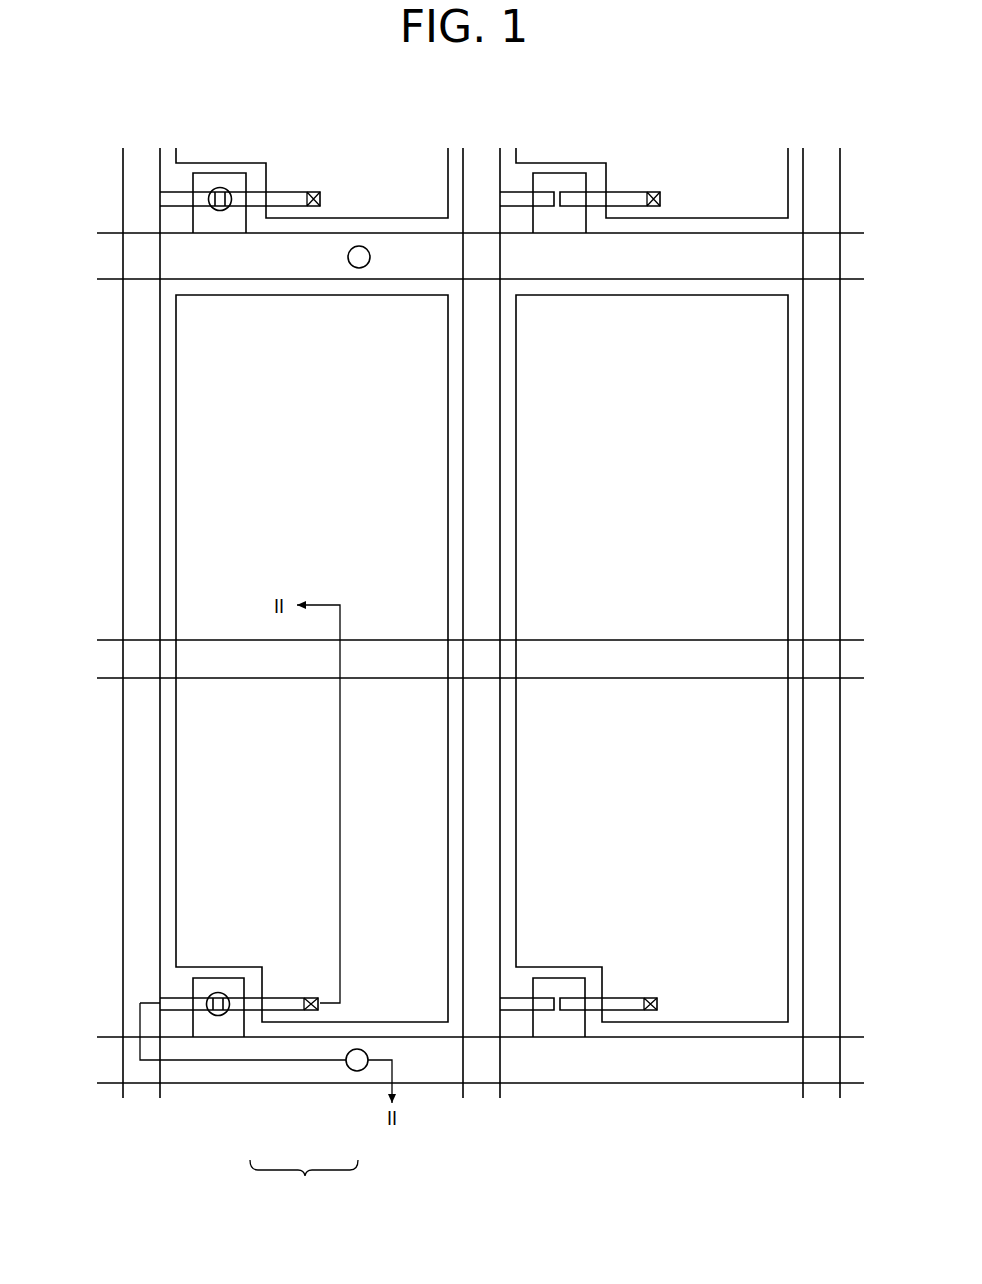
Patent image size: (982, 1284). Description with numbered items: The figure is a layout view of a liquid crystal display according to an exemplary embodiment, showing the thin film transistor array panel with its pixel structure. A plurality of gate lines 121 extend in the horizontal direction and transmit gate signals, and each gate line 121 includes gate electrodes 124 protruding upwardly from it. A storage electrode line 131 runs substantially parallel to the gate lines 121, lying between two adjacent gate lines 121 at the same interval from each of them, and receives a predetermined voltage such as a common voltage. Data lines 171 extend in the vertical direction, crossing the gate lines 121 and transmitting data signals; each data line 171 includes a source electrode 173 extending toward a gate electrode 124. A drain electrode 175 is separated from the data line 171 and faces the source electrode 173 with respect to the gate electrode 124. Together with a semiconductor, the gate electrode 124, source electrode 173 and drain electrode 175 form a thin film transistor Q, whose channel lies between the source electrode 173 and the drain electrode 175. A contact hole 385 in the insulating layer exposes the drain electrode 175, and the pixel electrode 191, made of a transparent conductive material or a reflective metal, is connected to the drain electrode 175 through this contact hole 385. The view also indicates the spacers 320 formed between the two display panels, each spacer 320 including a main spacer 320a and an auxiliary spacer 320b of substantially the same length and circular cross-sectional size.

The gate line 121 is at (168, 1073).
The gate electrode 124 is at (210, 977).
The storage electrode line 131 is at (205, 640).
The data line 171 is at (121, 706).
The source electrode 173 is at (185, 1011).
The drain electrode 175 is at (301, 1011).
The pixel electrode 191 is at (176, 565).
The contact hole 385 is at (306, 996).
The thin film transistor Q is at (236, 968).
The spacer 320 is at (304, 1178).
The main spacer 320a is at (218, 1016).
The auxiliary spacer 320b is at (357, 1072).